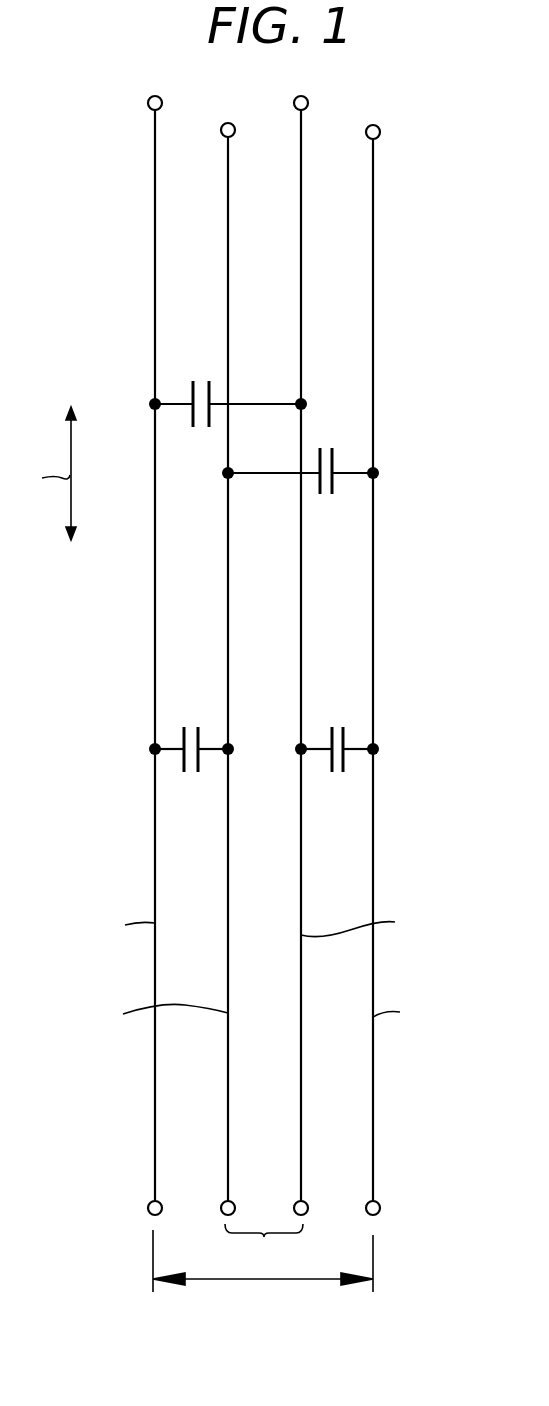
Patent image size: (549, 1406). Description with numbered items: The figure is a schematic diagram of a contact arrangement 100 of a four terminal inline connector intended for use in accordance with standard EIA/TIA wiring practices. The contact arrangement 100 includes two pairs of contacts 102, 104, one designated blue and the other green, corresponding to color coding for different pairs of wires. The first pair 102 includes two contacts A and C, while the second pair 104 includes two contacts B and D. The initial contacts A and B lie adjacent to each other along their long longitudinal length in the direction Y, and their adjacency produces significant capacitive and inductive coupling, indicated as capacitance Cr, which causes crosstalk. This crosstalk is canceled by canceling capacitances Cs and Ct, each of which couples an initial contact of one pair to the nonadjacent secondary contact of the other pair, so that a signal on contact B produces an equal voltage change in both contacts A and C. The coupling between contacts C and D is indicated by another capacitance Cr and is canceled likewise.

The contact arrangement 100 is at (145, 658).
The first pair of contacts 102 is at (216, 1217).
The second pair of contacts 104 is at (231, 1321).